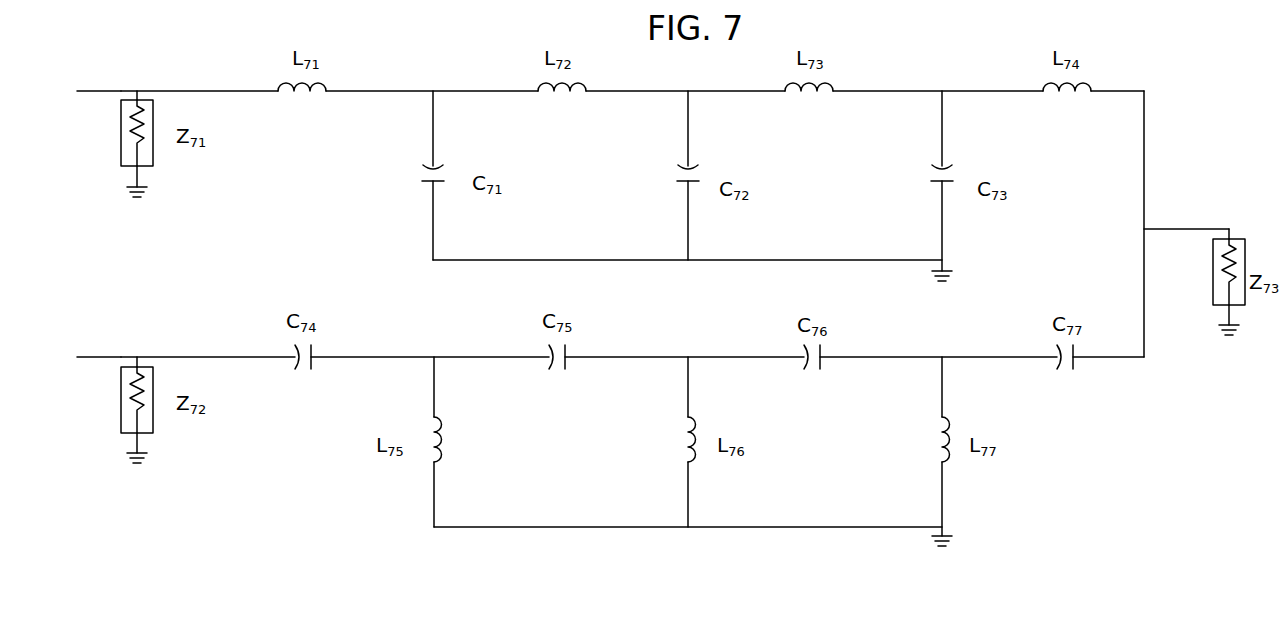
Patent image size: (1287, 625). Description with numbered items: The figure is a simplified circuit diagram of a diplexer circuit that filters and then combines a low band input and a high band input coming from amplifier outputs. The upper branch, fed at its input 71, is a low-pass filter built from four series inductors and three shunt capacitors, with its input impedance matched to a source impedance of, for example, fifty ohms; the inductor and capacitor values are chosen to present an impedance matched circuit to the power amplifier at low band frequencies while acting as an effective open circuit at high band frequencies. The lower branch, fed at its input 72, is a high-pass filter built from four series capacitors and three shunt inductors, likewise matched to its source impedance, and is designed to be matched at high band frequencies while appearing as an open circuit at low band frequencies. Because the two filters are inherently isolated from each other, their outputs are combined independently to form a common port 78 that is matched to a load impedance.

The first input port 71 is at (98, 73).
The second input port 72 is at (98, 340).
The common port 78 is at (1186, 213).